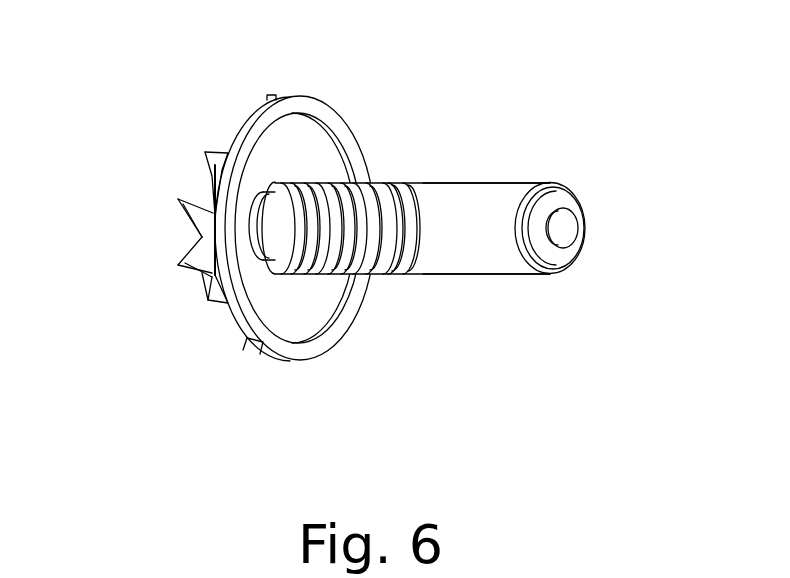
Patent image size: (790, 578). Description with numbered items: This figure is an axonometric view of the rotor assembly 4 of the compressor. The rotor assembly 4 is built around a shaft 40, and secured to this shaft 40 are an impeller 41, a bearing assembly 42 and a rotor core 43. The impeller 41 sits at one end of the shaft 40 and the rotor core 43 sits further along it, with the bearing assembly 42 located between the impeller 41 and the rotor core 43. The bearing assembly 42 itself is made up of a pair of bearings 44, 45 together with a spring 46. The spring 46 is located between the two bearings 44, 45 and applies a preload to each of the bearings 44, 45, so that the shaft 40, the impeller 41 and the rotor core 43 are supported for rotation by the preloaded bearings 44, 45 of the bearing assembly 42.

The rotor assembly 4 is at (140, 90).
The shaft 40 is at (570, 228).
The impeller 41 is at (300, 360).
The bearing assembly 42 is at (347, 277).
The rotor core 43 is at (483, 274).
The bearing 44 is at (295, 180).
The bearing 45 is at (413, 180).
The spring 46 is at (357, 182).